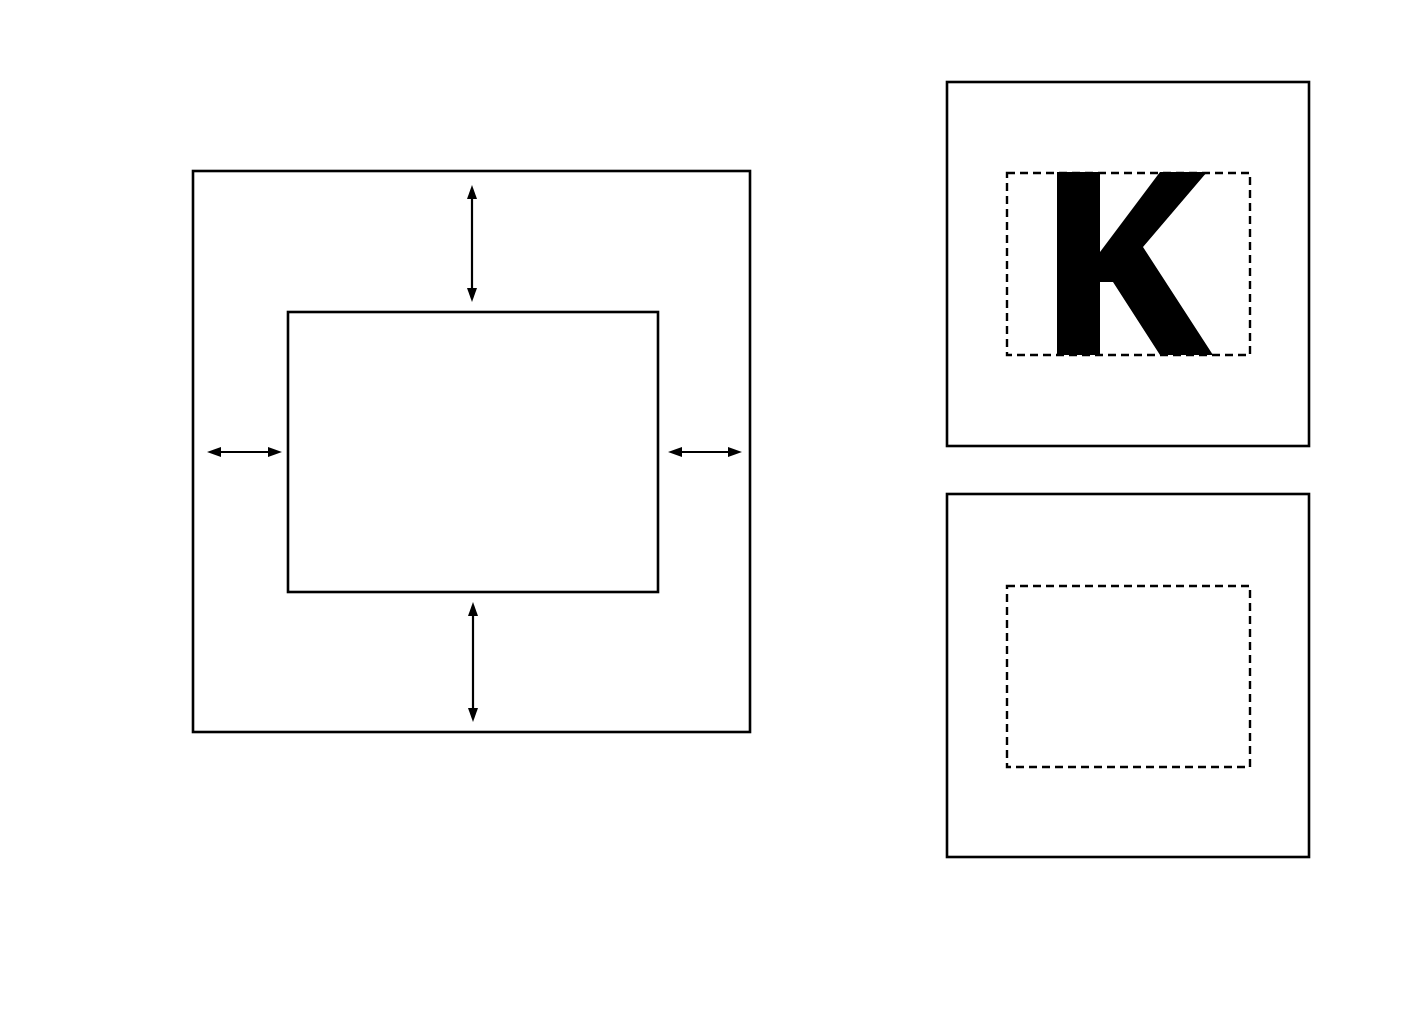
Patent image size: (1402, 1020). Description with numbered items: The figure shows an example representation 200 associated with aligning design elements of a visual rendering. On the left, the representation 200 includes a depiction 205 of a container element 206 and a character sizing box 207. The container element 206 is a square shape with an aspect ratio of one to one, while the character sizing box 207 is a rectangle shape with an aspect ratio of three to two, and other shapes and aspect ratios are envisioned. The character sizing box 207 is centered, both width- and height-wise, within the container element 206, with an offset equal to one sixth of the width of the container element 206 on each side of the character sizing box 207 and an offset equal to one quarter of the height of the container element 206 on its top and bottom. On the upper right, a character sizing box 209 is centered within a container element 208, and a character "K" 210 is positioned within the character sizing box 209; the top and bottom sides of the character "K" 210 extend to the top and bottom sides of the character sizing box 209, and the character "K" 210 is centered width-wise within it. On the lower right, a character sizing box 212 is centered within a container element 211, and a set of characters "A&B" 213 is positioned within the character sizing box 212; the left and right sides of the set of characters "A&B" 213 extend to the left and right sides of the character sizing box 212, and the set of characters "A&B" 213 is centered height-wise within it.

The representation 200 is at (738, 26).
The depiction 205 is at (423, 142).
The container element 206 is at (215, 170).
The character sizing box 207 is at (347, 310).
The container element 208 is at (1000, 82).
The character sizing box 209 is at (1007, 197).
The character "K" 210 is at (1170, 220).
The container element 211 is at (947, 523).
The character sizing box 212 is at (1007, 618).
The set of characters "A&B" 213 is at (1243, 653).